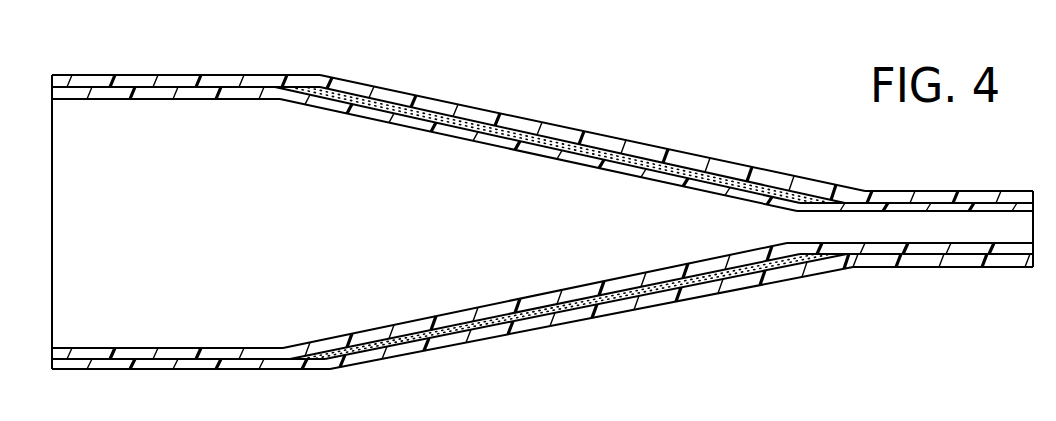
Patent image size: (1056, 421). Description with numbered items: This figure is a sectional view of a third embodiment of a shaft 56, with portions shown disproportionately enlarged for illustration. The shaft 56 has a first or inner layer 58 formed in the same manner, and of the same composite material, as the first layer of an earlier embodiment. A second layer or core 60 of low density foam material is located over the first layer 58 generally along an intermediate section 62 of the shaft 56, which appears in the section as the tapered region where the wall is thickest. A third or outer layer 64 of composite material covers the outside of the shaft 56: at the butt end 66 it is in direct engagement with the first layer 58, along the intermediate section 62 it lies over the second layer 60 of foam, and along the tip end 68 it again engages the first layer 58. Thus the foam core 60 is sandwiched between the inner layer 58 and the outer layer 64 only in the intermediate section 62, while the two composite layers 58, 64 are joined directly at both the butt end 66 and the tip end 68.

The shaft 56 is at (784, 143).
The first or inner layer 58 is at (672, 173).
The second layer or core 60 is at (710, 170).
The intermediate section 62 is at (537, 122).
The third or outer layer 64 is at (807, 183).
The butt end 66 is at (95, 75).
The tip end 68 is at (907, 191).